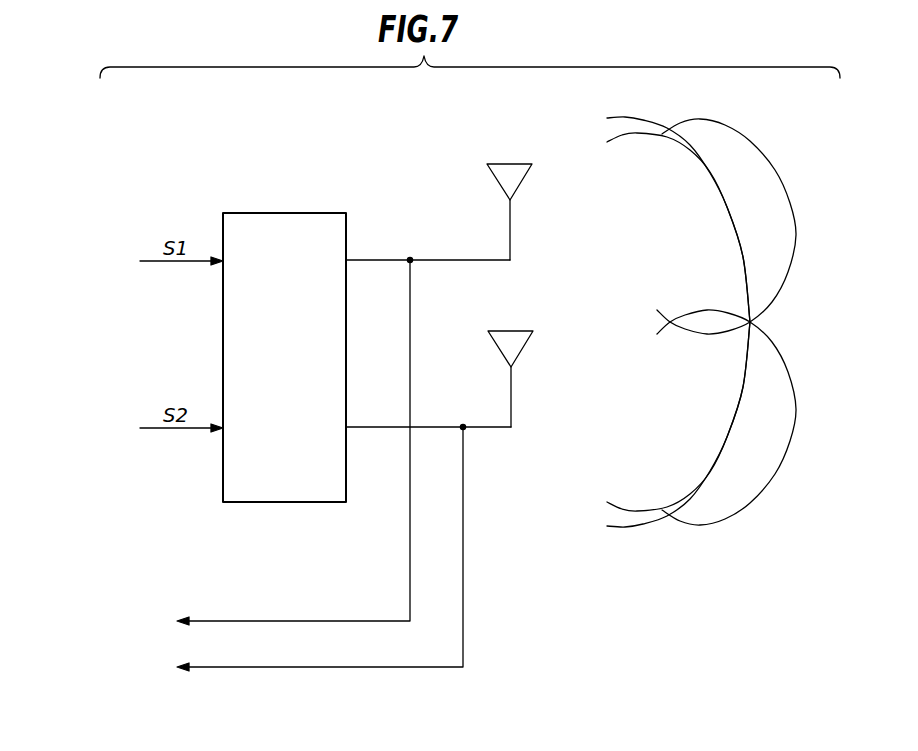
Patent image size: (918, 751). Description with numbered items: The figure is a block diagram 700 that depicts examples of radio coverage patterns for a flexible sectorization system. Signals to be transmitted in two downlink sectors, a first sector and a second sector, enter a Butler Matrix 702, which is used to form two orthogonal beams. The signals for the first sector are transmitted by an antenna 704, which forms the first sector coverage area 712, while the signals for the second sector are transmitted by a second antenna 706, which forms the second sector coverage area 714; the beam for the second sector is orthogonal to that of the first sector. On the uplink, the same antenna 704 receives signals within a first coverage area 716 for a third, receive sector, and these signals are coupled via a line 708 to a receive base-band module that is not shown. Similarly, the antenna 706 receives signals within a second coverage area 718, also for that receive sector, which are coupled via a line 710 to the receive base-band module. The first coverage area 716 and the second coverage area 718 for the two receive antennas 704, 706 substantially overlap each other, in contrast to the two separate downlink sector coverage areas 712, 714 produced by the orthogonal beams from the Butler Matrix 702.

The block diagram 700 is at (92, 172).
The Butler Matrix 702 is at (309, 213).
The antenna 704 is at (512, 233).
The antenna 706 is at (525, 350).
The line 708 is at (410, 328).
The line 710 is at (465, 612).
The S1 sector coverage area 712 is at (795, 215).
The S2 sector coverage area 714 is at (796, 425).
The first coverage area 716 is at (627, 137).
The second coverage area 718 is at (637, 113).